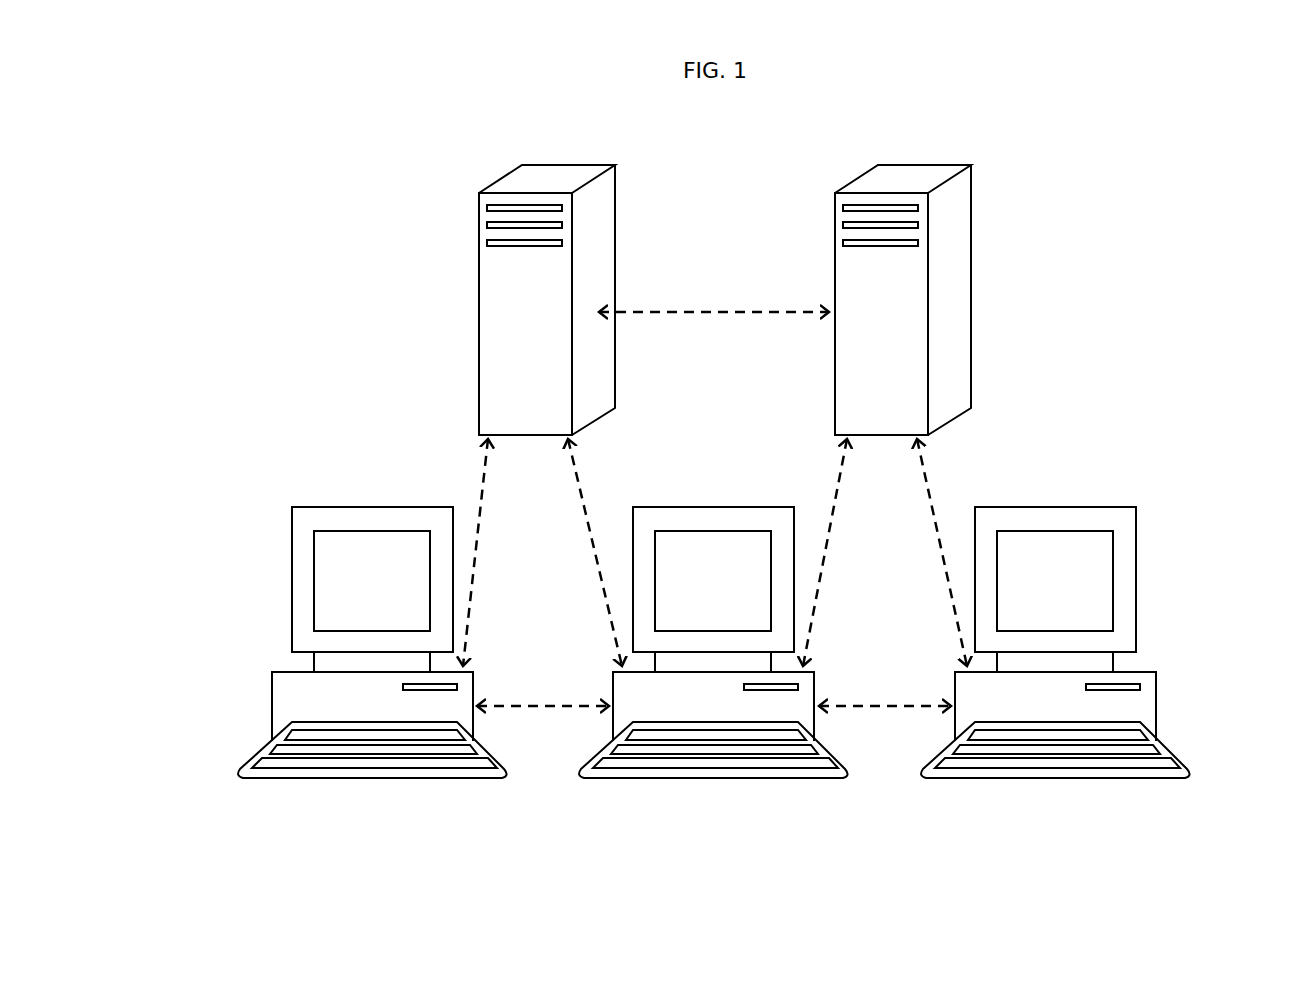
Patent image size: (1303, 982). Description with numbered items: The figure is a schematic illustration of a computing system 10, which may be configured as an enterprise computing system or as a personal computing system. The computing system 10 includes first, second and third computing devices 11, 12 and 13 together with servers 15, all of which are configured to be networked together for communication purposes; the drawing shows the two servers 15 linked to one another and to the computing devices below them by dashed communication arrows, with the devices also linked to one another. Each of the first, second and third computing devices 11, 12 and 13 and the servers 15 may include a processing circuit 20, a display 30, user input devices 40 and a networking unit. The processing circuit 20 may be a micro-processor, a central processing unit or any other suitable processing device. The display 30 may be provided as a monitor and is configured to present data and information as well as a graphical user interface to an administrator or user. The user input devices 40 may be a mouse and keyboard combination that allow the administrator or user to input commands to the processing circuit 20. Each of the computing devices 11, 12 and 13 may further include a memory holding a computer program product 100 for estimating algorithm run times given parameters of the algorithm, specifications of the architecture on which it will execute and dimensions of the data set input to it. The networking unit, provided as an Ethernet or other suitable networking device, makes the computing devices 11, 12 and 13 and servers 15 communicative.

The computing system 10 is at (376, 334).
The first computing device 11 is at (270, 773).
The second computing device 12 is at (667, 775).
The third computing device 13 is at (1015, 775).
The servers 15 is at (515, 187).
The processing circuit 20 is at (503, 299).
The display 30 is at (303, 527).
The user input devices 40 is at (617, 685).
The computer program product 100 is at (403, 688).